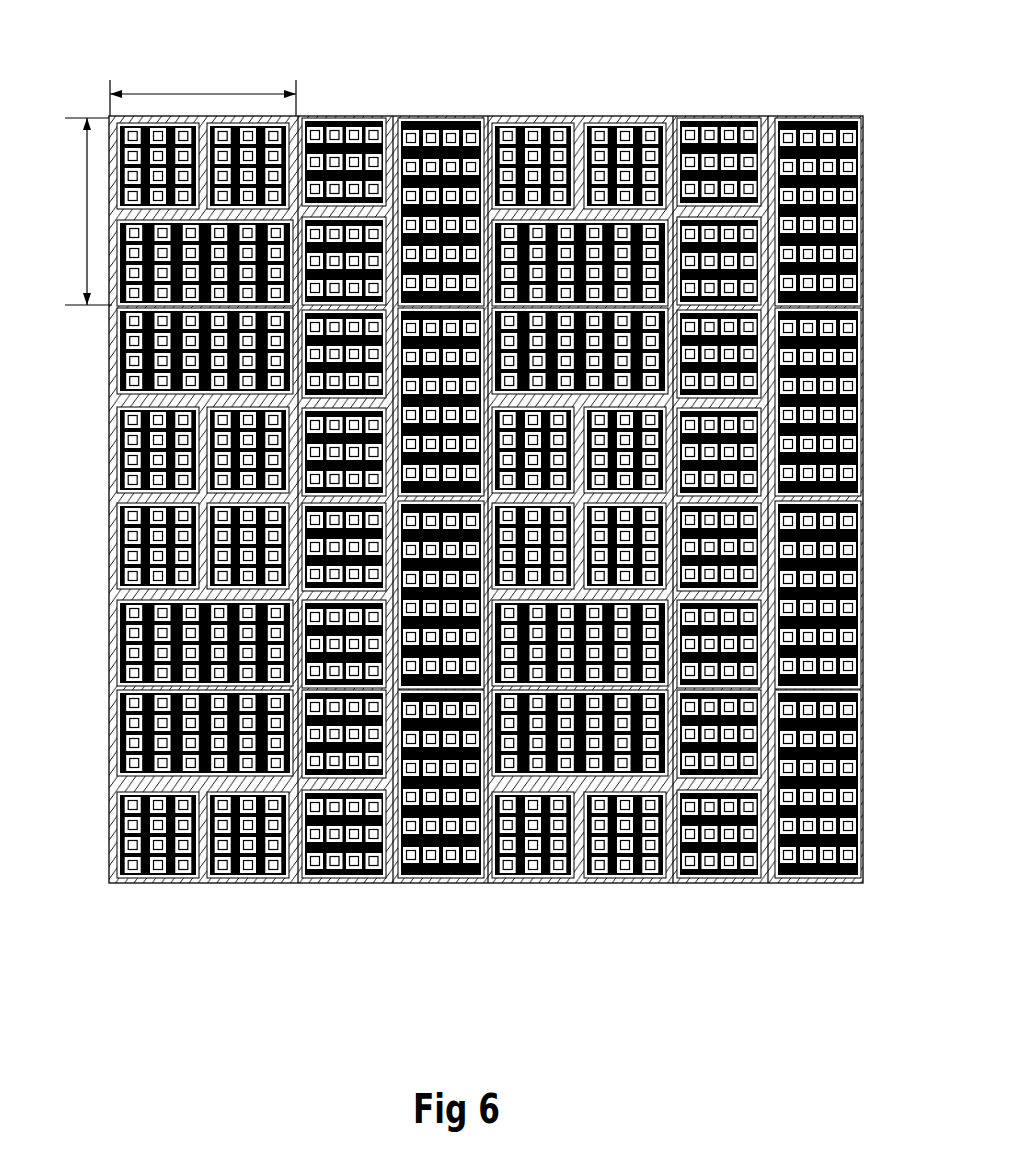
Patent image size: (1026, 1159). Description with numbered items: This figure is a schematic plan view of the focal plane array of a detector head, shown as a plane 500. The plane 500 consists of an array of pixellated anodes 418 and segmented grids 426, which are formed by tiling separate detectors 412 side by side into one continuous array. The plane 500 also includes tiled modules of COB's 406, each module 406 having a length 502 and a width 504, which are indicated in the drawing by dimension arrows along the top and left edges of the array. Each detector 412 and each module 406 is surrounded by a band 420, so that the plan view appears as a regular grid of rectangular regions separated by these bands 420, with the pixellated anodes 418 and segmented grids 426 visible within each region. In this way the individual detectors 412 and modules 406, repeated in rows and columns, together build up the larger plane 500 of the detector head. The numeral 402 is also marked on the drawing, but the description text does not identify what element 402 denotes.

The COB module 406 is at (102, 108).
The length 502 is at (167, 86).
The width 504 is at (78, 173).
The band 420 is at (363, 110).
The memory array 402 is at (458, 107).
The segmented grid 426 is at (620, 125).
The pixellated anode 418 is at (718, 128).
The plane 500 is at (823, 120).
The detector 412 is at (857, 207).